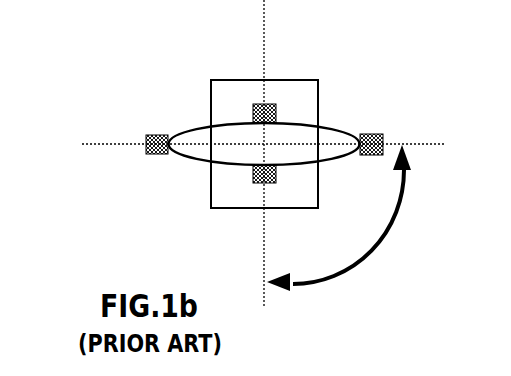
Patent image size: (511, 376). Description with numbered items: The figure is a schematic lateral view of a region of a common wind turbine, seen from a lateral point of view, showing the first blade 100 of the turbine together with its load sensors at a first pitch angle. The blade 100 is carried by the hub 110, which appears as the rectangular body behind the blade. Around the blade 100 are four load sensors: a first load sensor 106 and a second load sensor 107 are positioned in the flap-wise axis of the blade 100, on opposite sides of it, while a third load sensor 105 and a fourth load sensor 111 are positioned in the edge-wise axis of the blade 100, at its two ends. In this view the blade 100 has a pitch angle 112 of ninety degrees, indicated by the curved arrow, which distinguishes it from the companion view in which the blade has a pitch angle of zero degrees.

The first blade 100 is at (210, 150).
The third load sensor 105 is at (155, 138).
The first load sensor 106 is at (260, 107).
The second load sensor 107 is at (254, 178).
The hub 110 is at (296, 101).
The fourth load sensor 111 is at (374, 138).
The pitch angle 112 is at (380, 242).